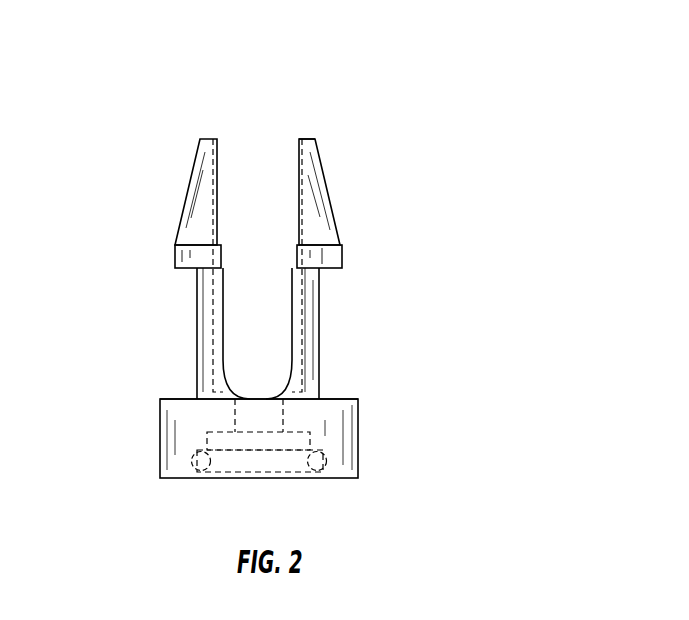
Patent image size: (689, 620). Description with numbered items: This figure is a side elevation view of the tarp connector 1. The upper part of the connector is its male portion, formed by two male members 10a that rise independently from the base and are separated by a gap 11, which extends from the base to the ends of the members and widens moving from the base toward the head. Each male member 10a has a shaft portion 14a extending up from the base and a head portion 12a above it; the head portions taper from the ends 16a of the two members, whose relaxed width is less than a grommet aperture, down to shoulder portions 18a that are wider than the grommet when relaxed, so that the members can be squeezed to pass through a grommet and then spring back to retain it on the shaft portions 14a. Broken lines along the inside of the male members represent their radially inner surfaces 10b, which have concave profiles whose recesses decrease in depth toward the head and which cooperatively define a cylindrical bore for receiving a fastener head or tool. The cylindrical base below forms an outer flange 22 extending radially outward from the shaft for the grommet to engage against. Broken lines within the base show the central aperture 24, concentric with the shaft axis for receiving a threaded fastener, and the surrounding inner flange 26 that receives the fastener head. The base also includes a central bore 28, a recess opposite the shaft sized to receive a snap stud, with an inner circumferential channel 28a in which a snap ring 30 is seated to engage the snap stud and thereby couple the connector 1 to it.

The connector 1 is at (446, 99).
The male members 10a is at (211, 122).
The gap 11 is at (246, 161).
The radially inner surfaces 10b is at (302, 338).
The head portion 12a is at (315, 226).
The shaft portion 14a is at (307, 312).
The ends 16a is at (300, 140).
The shoulder portions 18a is at (320, 256).
The outer flange 22 is at (337, 399).
The central aperture 24 is at (262, 414).
The inner flange 26 is at (235, 399).
The central bore 28 is at (214, 442).
The inner circumferential channel 28a is at (193, 462).
The snap ring 30 is at (320, 469).